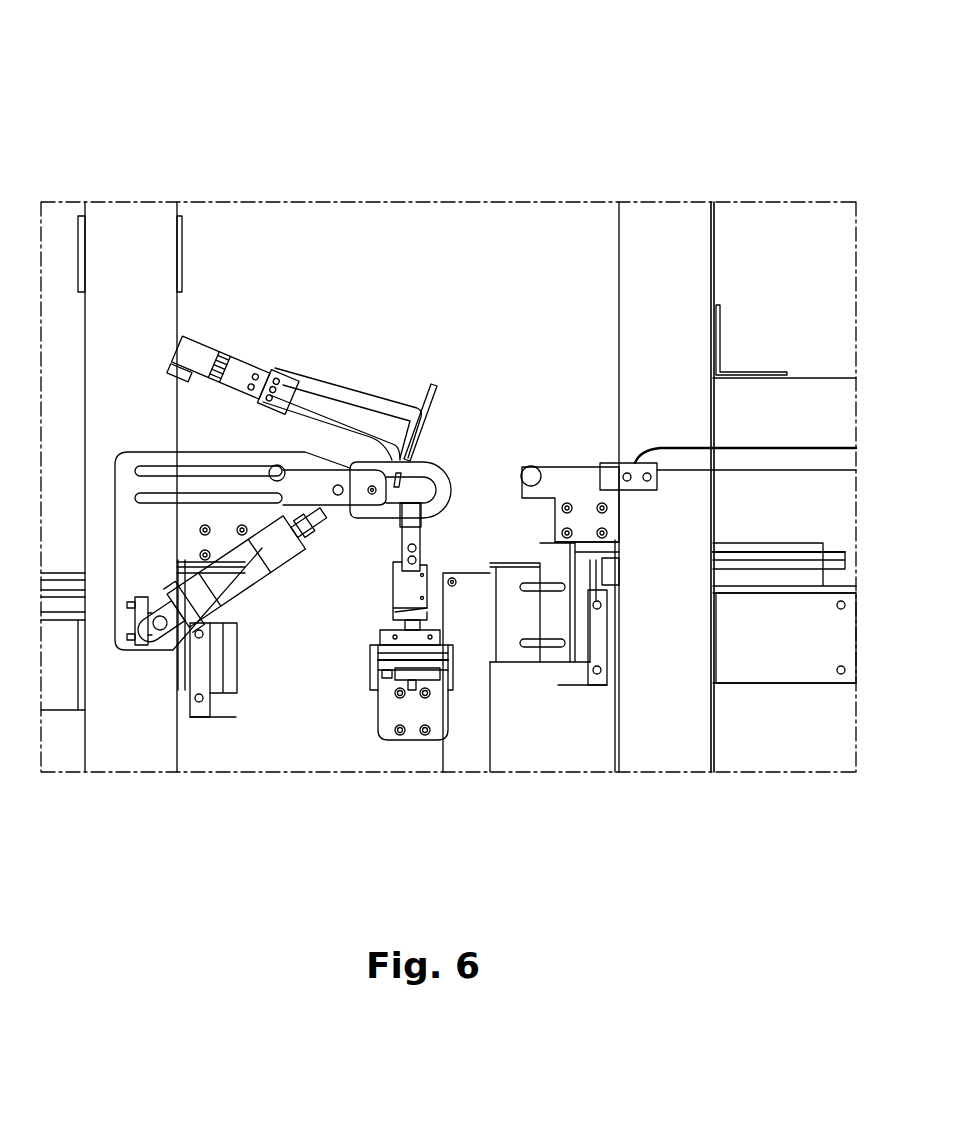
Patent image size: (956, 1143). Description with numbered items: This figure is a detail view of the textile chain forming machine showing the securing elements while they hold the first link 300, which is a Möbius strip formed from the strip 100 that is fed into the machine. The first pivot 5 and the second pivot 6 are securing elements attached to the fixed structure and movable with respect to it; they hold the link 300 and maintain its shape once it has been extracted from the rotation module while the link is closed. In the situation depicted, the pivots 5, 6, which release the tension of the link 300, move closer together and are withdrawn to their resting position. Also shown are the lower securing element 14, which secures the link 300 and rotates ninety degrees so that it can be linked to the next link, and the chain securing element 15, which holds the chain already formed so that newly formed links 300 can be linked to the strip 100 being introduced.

The strip 100 is at (752, 447).
The link 300 is at (422, 466).
The chain securing element 15 is at (307, 383).
The second pivot 6 is at (277, 473).
The lower securing element 14 is at (412, 588).
The first pivot 5 is at (530, 482).